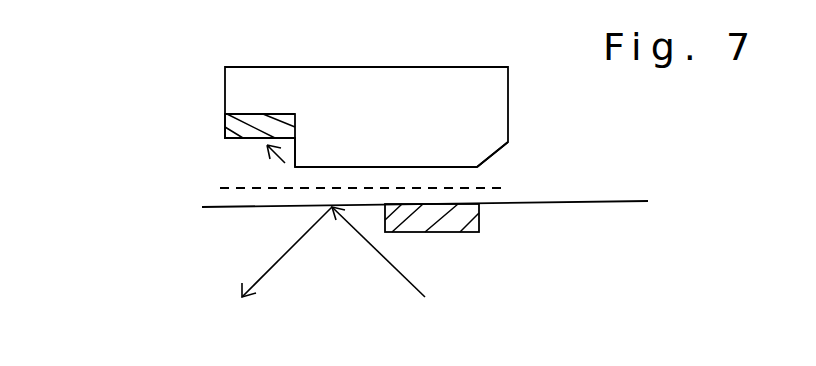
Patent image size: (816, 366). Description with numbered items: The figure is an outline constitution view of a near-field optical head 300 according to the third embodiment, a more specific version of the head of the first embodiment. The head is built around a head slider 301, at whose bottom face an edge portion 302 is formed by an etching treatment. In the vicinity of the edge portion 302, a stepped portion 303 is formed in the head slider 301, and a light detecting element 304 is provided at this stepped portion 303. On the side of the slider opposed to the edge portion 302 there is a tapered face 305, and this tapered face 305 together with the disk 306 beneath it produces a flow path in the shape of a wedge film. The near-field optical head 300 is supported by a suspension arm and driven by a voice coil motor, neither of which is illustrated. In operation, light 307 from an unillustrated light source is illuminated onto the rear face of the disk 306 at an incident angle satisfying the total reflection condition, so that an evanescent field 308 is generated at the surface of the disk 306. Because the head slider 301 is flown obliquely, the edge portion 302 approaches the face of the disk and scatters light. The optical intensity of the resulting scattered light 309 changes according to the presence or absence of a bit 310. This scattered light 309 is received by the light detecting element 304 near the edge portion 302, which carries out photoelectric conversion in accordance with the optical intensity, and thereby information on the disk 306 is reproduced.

The near-field optical head 300 is at (101, 107).
The head slider 301 is at (494, 101).
The edge portion 302 is at (300, 167).
The stepped portion 303 is at (263, 114).
The light detecting element 304 is at (235, 130).
The tapered face 305 is at (493, 150).
The disk 306 is at (613, 218).
The light 307 is at (407, 277).
The evanescent field 308 is at (230, 188).
The scattered light 309 is at (283, 161).
The bit 310 is at (483, 211).